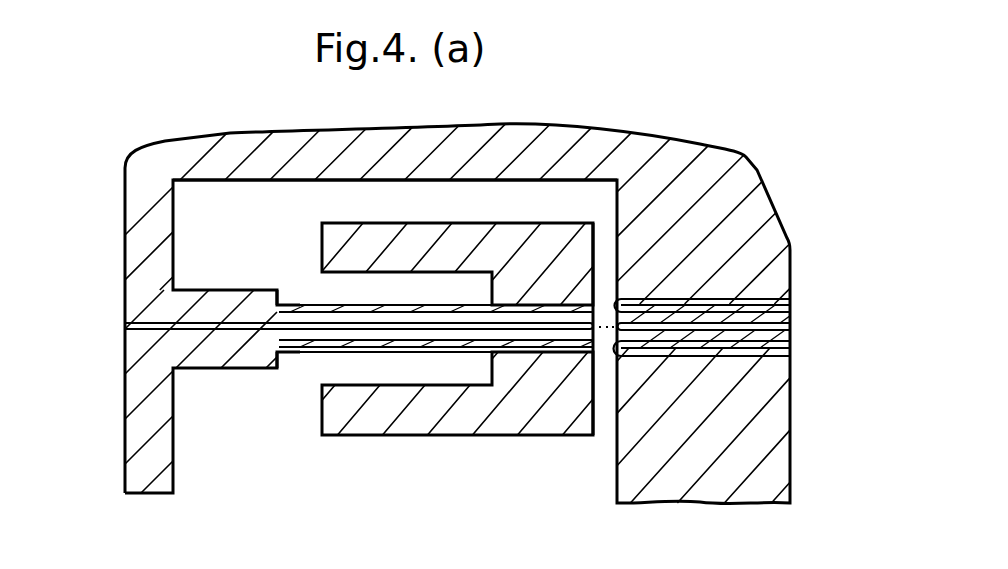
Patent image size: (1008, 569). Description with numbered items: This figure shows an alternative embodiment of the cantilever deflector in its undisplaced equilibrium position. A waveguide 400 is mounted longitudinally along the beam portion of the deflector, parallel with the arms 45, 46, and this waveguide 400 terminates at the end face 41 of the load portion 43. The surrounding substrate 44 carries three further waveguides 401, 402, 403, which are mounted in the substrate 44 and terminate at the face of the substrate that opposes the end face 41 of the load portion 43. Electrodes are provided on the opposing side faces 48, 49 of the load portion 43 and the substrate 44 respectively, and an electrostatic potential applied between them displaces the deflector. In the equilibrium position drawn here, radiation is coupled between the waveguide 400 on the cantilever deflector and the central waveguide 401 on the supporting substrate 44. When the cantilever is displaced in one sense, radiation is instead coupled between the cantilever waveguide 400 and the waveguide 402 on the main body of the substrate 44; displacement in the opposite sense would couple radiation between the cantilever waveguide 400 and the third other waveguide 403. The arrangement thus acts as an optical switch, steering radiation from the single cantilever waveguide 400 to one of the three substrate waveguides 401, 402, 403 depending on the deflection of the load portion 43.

The end face 41 is at (597, 416).
The load portion 43 is at (527, 432).
The substrate 44 is at (160, 440).
The arm 45 is at (302, 354).
The arm 46 is at (301, 303).
The side face of load portion 48 is at (428, 222).
The side face of substrate 49 is at (478, 183).
The waveguide 400 is at (130, 343).
The central waveguide 401 is at (783, 326).
The waveguide 402 is at (777, 298).
The third other waveguide 403 is at (783, 350).